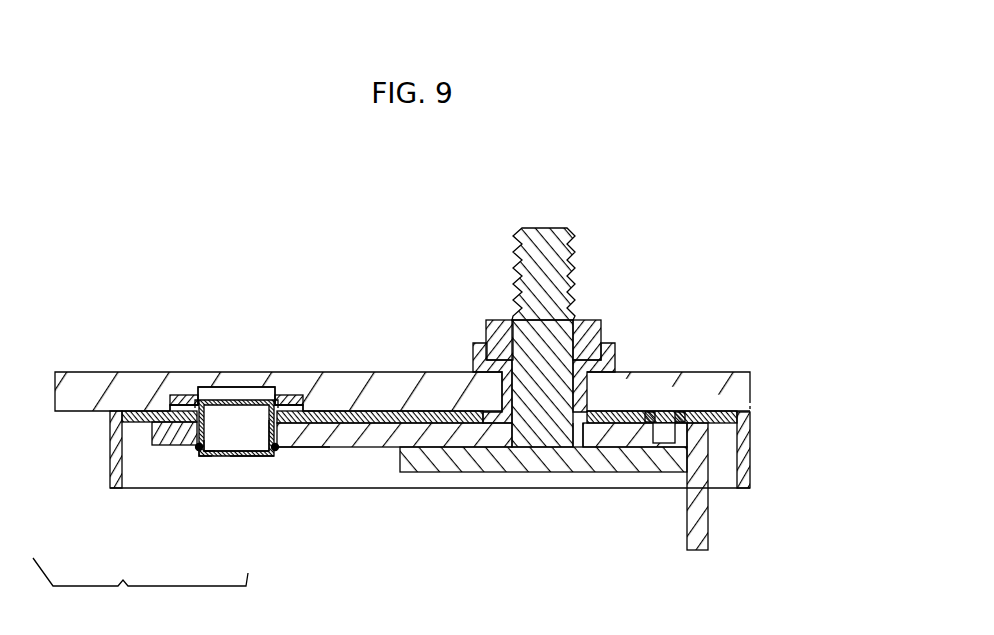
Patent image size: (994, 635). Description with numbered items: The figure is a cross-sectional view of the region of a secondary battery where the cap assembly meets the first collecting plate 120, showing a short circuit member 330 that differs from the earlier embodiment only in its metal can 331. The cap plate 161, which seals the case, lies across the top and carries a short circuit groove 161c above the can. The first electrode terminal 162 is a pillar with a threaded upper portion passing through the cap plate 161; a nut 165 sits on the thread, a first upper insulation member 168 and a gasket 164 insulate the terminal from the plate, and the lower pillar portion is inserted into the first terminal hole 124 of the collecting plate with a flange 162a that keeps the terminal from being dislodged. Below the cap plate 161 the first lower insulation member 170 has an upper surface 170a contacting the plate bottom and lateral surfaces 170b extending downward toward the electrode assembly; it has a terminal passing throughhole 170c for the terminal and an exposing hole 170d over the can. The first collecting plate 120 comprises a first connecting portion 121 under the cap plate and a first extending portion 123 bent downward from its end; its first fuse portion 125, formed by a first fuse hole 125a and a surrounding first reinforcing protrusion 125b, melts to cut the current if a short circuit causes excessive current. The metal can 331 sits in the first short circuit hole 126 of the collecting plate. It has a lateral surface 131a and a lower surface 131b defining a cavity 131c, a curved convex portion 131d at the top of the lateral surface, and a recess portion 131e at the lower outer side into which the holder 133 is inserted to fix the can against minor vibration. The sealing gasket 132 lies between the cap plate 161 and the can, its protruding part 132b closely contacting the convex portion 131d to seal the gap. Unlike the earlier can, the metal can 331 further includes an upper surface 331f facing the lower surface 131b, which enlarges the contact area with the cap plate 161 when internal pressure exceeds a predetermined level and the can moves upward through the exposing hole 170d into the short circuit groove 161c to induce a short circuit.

The first collecting plate 120 is at (732, 468).
The first connecting portion 121 is at (630, 437).
The first extending portion 123 is at (705, 520).
The first terminal hole 124 is at (525, 433).
The first fuse portion 125 is at (663, 305).
The first fuse hole 125a is at (660, 412).
The first reinforcing protrusion 125b is at (683, 412).
The first short circuit hole 126 is at (268, 440).
The lateral surface 131a is at (199, 457).
The lower surface 131b is at (213, 456).
The cavity 131c is at (235, 452).
The convex portion 131d is at (120, 487).
The recess portion 131e is at (190, 445).
The sealing gasket 132 is at (182, 400).
The protruding part 132b is at (213, 400).
The holder 133 is at (278, 450).
The cap plate 161 is at (77, 383).
The short circuit groove 161c is at (290, 390).
The first electrode terminal 162 is at (548, 236).
The flange 162a is at (453, 462).
The gasket 164 is at (466, 372).
The nut 165 is at (585, 325).
The first upper insulation member 168 is at (486, 343).
The first lower insulation member 170 is at (751, 422).
The upper surface 170a is at (742, 400).
The lateral surfaces 170b is at (745, 437).
The terminal passing throughhole 170c is at (578, 433).
The exposing hole 170d is at (295, 447).
The short circuit member 330 is at (258, 362).
The metal can 331 is at (153, 529).
The upper surface 331f is at (252, 457).